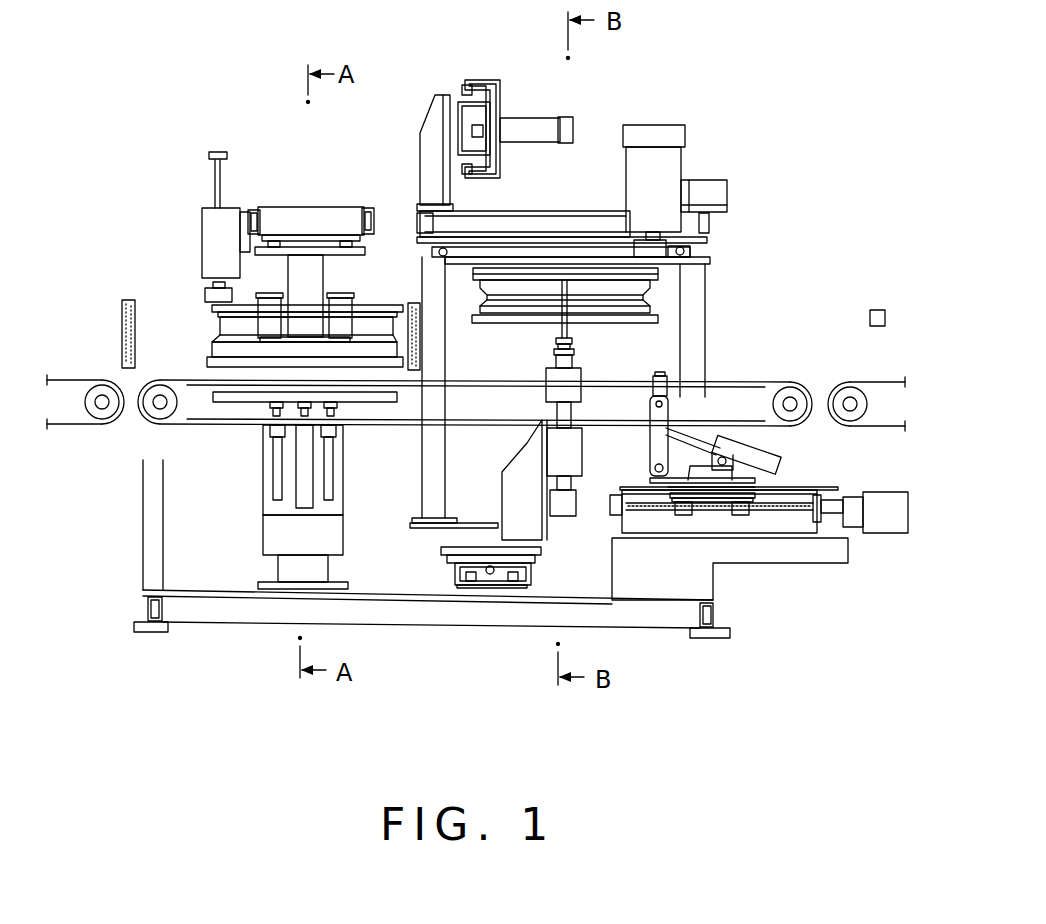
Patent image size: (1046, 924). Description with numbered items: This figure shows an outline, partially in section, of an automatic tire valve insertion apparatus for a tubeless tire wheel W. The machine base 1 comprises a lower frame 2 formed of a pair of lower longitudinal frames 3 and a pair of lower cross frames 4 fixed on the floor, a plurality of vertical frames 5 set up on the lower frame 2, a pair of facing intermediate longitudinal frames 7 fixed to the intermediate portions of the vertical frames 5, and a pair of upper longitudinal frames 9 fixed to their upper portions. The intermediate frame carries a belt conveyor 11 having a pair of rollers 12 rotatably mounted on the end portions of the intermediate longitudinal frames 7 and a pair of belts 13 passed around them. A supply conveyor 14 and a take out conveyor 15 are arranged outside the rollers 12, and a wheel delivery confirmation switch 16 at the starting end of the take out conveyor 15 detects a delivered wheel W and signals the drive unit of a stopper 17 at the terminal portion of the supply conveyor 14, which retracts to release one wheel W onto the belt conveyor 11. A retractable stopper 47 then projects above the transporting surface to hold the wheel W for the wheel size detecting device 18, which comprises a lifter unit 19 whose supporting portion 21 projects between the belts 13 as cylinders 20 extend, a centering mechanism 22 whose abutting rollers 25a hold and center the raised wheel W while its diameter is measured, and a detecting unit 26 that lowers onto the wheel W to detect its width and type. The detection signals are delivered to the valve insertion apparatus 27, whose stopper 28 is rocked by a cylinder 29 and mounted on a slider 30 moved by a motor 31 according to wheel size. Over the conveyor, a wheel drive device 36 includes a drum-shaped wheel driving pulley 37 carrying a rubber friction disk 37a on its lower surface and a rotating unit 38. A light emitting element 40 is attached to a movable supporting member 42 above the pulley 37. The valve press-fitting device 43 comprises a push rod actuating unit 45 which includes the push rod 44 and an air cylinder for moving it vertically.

The machine base 1 is at (445, 627).
The lower frame 2 is at (195, 640).
The lower longitudinal frame 3 is at (235, 628).
The lower cross frame 4 is at (148, 608).
The vertical frame 5 is at (438, 455).
The intermediate longitudinal frame 7 is at (715, 382).
The upper longitudinal frame 9 is at (258, 210).
The belt conveyor 11 is at (200, 432).
The roller 12 is at (150, 420).
The belt 13 is at (185, 380).
The supply conveyor 14 is at (80, 425).
The take out conveyor 15 is at (878, 382).
The wheel delivery confirmation switch 16 is at (870, 316).
The stopper 17 is at (122, 320).
The wheel size detecting device 18 is at (192, 208).
The lifter unit 19 is at (262, 535).
The cylinder 20 is at (332, 470).
The supporting portion 21 is at (250, 404).
The centering mechanism 22 is at (300, 205).
The abutting roller 25a is at (265, 300).
The detecting unit 26 is at (206, 295).
The valve insertion apparatus 27 is at (612, 118).
The stopper 28 is at (660, 375).
The cylinder 29 is at (778, 458).
The slider 30 is at (835, 487).
The motor 31 is at (885, 536).
The wheel drive device 36 is at (680, 160).
The wheel driving pulley 37 is at (475, 262).
The friction disk 37a is at (453, 265).
The rotating unit 38 is at (640, 245).
The light emitting element 40 is at (570, 118).
The supporting member 42 is at (500, 98).
The valve press-fitting device 43 is at (562, 522).
The push rod 44 is at (572, 340).
The push rod actuating unit 45 is at (580, 455).
The retractable stopper 47 is at (410, 305).
The wheel W is at (658, 303).